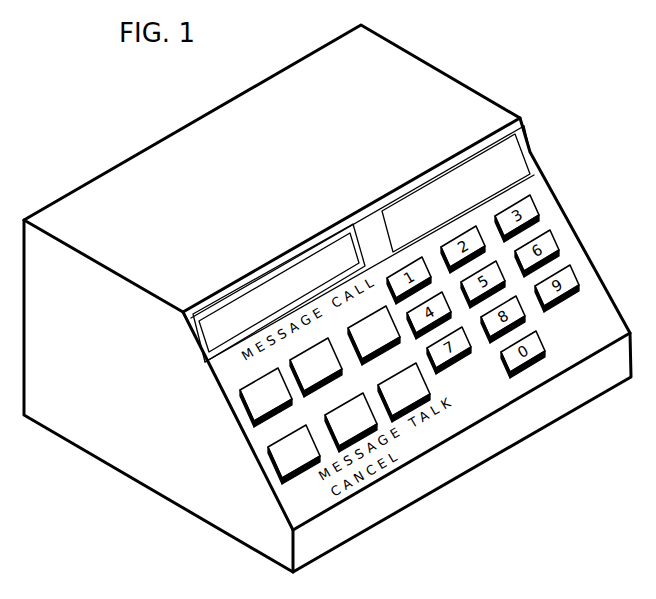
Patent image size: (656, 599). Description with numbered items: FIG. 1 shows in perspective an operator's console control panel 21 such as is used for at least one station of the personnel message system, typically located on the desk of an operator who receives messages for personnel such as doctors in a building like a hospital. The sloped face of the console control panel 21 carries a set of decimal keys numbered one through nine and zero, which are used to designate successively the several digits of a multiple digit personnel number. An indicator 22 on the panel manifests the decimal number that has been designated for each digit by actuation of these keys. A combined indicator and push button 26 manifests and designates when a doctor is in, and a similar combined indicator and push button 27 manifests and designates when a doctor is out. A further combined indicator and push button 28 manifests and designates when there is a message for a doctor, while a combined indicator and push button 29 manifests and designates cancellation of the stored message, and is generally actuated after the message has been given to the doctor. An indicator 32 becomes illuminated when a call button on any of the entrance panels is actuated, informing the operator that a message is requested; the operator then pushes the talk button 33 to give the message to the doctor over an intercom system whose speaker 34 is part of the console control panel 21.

The console control panel 21 is at (588, 261).
The indicator 22 is at (528, 150).
The speaker 34 is at (262, 277).
The combined indicator and push button 26 is at (242, 405).
The combined indicator and push button 27 is at (274, 465).
The combined indicator and push button 28 is at (322, 398).
The combined indicator and push button 29 is at (338, 410).
The indicator 32 is at (378, 353).
The talk button 33 is at (424, 382).